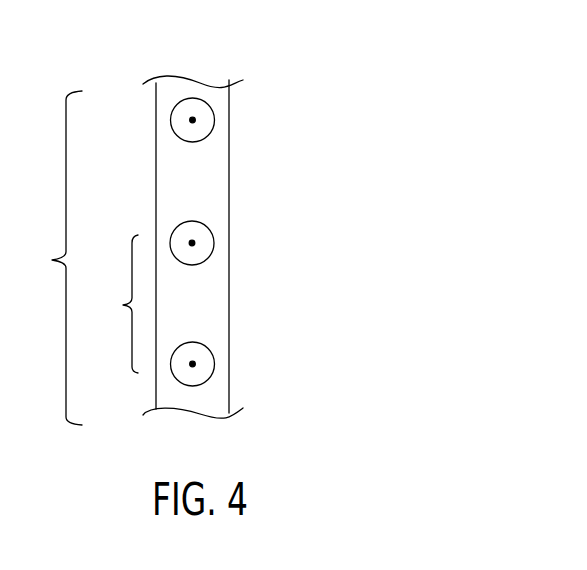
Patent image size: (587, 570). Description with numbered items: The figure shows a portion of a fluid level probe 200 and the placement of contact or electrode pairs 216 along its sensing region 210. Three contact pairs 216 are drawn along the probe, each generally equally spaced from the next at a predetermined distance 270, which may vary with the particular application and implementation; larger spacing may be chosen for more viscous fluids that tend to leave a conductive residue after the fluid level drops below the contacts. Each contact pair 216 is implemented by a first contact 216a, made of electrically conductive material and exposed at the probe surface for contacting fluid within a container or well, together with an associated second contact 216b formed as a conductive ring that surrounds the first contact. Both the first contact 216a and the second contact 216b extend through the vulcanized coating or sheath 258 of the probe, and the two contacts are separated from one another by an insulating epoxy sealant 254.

The fluid level probe 200 is at (298, 77).
The sensing region 210 is at (52, 260).
The contact pair 216 is at (212, 346).
The first contact 216a is at (191, 111).
The second contact 216b is at (213, 383).
The insulating epoxy sealant 254 is at (203, 243).
The vulcanized coating or sheath 258 is at (205, 168).
The predetermined distance 270 is at (123, 305).